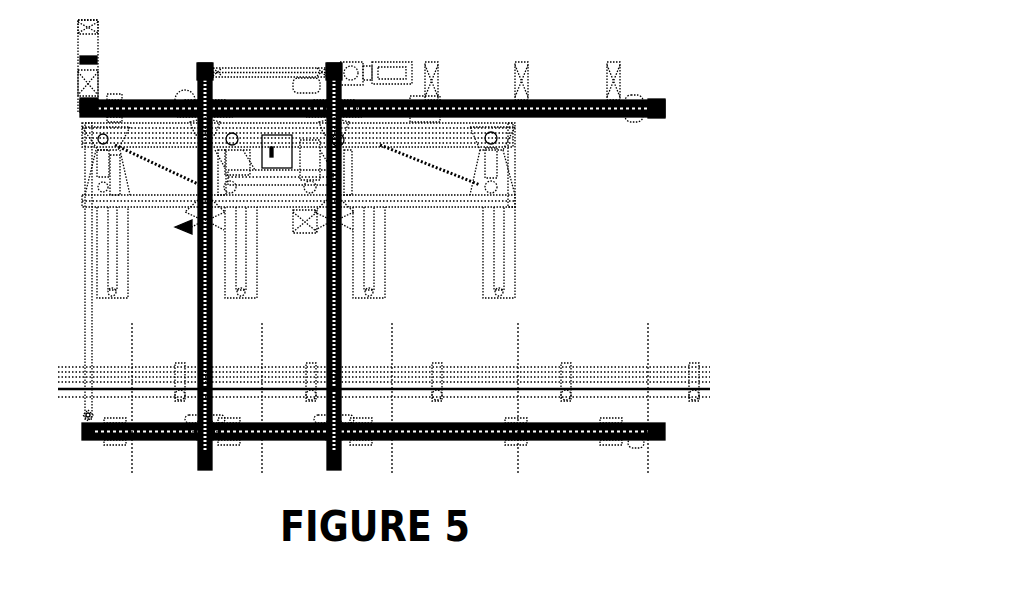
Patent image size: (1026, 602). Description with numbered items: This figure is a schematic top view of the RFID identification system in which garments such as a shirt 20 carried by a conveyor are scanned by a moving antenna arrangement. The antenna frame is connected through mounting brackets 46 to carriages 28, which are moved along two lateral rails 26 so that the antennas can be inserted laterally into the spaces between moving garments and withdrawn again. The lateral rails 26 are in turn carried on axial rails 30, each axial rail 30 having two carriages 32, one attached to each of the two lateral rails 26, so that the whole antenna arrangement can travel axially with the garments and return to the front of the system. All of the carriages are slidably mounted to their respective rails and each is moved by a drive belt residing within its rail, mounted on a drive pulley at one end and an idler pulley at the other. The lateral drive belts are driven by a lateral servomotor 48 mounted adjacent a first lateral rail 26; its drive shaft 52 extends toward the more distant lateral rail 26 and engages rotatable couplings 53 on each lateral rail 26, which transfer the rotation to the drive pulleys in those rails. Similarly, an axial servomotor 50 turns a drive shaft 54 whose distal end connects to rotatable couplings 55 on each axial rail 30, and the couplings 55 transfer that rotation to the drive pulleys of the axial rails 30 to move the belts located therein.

The shirt 20 is at (518, 463).
The lateral rails 26 is at (330, 457).
The carriages 28 is at (208, 206).
The axial rails 30 is at (612, 422).
The carriages 32 is at (215, 98).
The mounting brackets 46 is at (207, 200).
The lateral servomotor 48 is at (388, 67).
The axial servomotor 50 is at (84, 42).
The drive shaft 52 is at (268, 68).
The rotatable couplings 53 is at (217, 70).
The drive shaft 54 is at (85, 247).
The rotatable couplings 55 is at (83, 417).